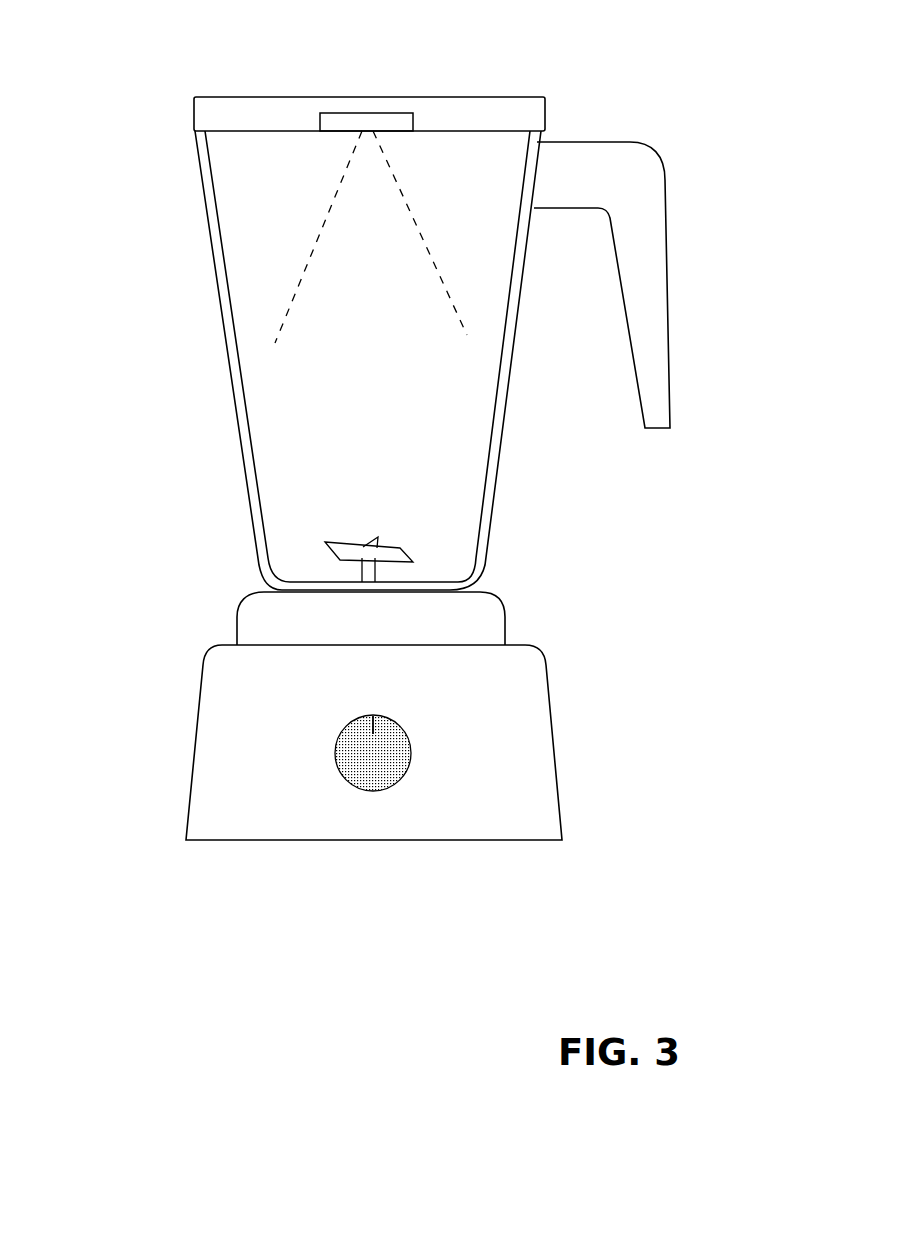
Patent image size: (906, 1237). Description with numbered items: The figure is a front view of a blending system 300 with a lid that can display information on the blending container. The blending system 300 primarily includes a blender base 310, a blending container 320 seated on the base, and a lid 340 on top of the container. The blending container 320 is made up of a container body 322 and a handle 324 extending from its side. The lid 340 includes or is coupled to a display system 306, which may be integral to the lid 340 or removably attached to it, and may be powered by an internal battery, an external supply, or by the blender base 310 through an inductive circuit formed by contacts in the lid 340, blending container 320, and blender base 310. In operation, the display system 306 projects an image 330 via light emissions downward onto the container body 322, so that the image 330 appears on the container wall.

The blending system 300 is at (169, 37).
The display system 306 is at (360, 120).
The blender base 310 is at (198, 762).
The blending container 320 is at (192, 283).
The container body 322 is at (457, 312).
The handle 324 is at (660, 263).
The image 330 is at (308, 395).
The lid 340 is at (489, 82).